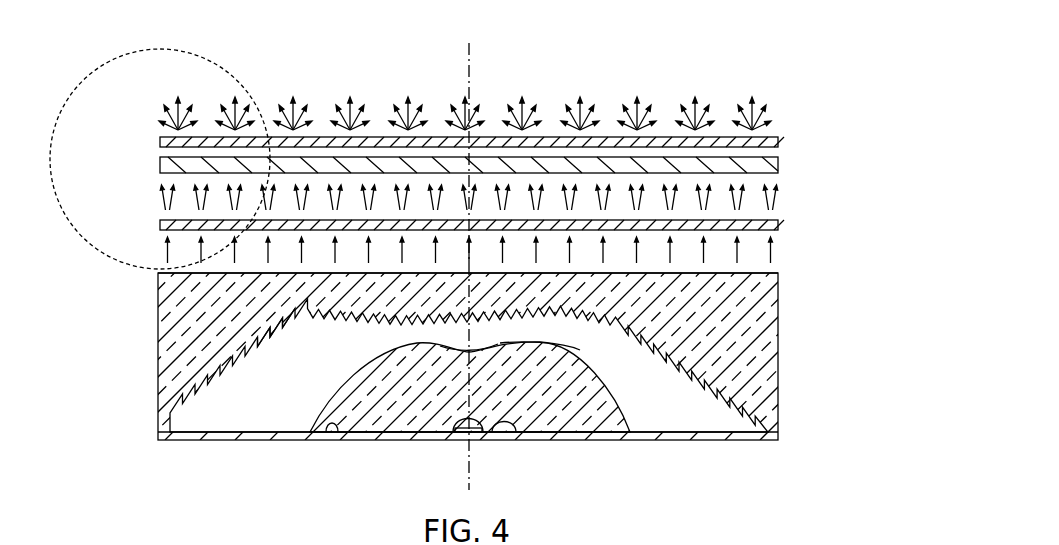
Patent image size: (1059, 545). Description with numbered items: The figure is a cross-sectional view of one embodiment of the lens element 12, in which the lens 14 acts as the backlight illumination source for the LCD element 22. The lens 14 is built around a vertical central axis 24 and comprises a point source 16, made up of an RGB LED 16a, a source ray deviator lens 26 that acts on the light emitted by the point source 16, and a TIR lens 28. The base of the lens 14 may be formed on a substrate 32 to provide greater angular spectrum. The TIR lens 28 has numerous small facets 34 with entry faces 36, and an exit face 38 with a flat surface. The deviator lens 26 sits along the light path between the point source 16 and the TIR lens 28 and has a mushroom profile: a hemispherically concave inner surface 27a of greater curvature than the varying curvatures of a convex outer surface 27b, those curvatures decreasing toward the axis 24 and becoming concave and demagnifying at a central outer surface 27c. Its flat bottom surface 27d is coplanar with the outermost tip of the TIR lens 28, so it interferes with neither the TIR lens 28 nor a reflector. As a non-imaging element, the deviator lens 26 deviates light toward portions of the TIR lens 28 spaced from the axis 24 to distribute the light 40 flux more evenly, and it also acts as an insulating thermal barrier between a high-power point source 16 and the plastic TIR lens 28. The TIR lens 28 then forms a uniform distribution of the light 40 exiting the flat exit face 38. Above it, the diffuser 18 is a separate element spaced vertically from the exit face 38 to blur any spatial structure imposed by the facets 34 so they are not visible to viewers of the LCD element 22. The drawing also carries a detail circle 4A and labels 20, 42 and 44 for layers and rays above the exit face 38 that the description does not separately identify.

The lens element 12 is at (676, 50).
The detail region 4A is at (197, 54).
The vertical central axis 24 is at (472, 71).
The diffused light rays 44 is at (167, 109).
The diffuser sheet 20 is at (778, 142).
The LCD element 22 is at (778, 165).
The redirected light rays 42 is at (160, 195).
The diffuser 18 is at (778, 225).
The light 40 is at (160, 250).
The exit face 38 is at (778, 273).
The TIR lens 28 is at (778, 318).
The lens 14 is at (472, 362).
The entry faces 36 is at (283, 337).
The facets 34 is at (235, 395).
The central outer surface 27c is at (467, 352).
The convex outer surface 27b is at (536, 346).
The source ray deviator lens 26 is at (617, 378).
The flat bottom surface 27d is at (328, 428).
The point source 16 is at (460, 447).
The RGB LED 16a is at (477, 433).
The hemispherically concave inner surface 27a is at (518, 430).
The substrate 32 is at (740, 440).